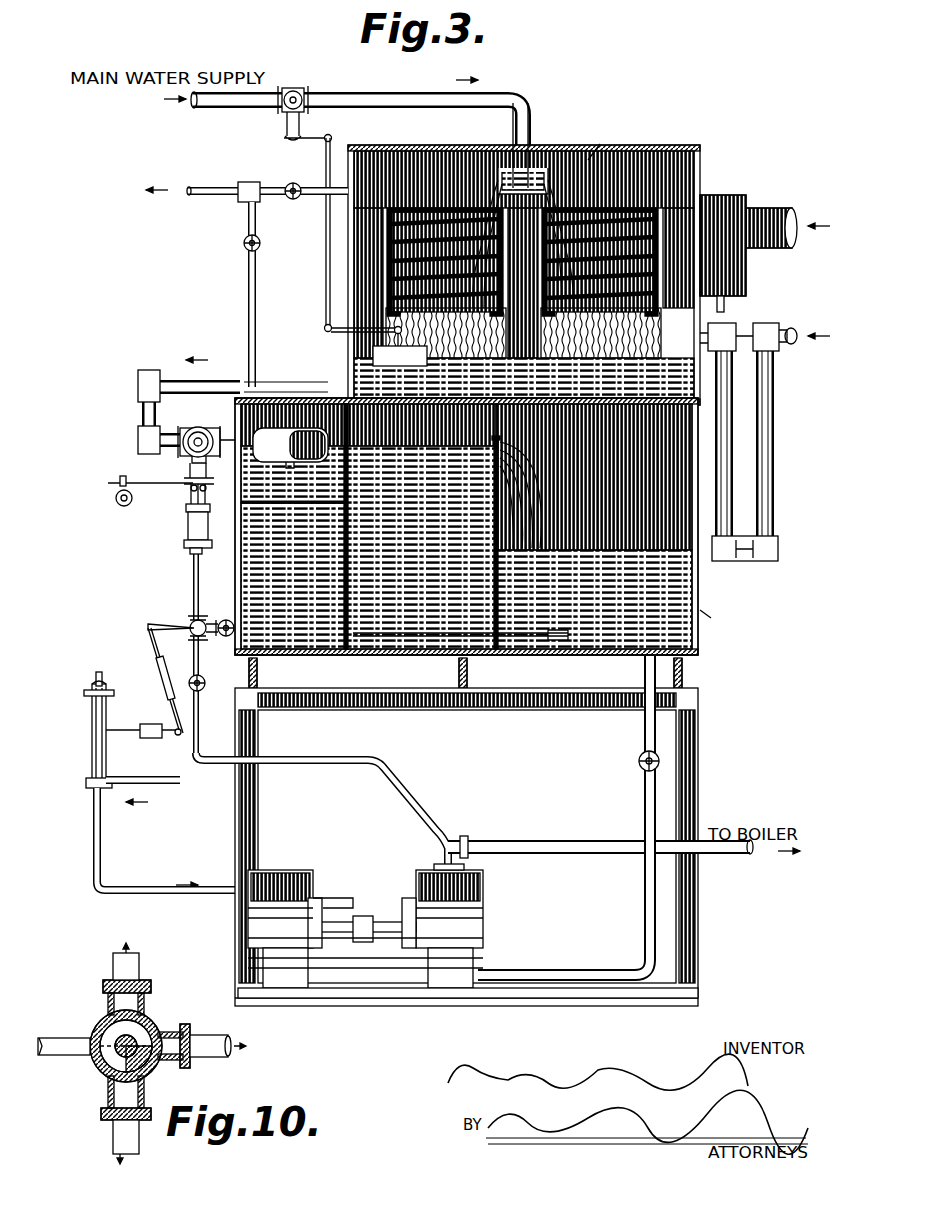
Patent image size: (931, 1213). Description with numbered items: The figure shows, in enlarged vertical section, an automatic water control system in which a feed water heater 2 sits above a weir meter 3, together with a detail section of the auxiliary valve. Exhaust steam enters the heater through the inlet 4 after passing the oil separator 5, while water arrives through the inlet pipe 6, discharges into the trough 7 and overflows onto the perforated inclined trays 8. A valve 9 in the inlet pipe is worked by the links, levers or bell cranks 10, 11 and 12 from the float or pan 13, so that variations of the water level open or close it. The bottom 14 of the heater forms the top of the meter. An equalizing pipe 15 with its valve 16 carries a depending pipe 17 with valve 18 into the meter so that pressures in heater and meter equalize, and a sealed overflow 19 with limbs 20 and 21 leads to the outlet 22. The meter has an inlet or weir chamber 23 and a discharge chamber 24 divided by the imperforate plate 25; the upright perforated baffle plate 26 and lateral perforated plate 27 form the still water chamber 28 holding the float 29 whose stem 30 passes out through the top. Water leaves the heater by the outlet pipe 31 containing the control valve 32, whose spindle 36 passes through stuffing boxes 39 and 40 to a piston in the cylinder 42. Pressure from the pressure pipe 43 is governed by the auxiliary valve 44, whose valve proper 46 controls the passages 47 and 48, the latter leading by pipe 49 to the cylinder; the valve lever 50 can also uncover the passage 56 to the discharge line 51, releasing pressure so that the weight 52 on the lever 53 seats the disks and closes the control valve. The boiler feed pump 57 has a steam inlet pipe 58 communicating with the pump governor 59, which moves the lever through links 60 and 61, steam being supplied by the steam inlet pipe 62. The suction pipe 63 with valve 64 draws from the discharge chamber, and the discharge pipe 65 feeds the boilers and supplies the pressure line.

In FIG. 3, the feed water heater 2 is at (536, 260).
In FIG. 3, the weir meter 3 is at (499, 543).
In FIG. 3, the inlet for the exhaust steam 4 is at (762, 238).
In FIG. 3, the oil separator 5 is at (748, 233).
In FIG. 3, the inlet pipe 6 is at (246, 97).
In FIG. 3, the trough 7 is at (522, 152).
In FIG. 3, the perforated inclined plates or trays 8 is at (592, 220).
In FIG. 3, the valve 9 is at (288, 82).
In FIG. 3, the link 10 is at (306, 130).
In FIG. 3, the lever 11 is at (318, 270).
In FIG. 3, the bell crank 12 is at (326, 326).
In FIG. 3, the float or pan 13 is at (418, 358).
In FIG. 3, the bottom of the heater 14 is at (600, 398).
In FIG. 3, the equalizing pipe 15 is at (254, 178).
In FIG. 3, the valve 16 is at (289, 175).
In FIG. 3, the pipe 17 is at (241, 265).
In FIG. 3, the valve 18 is at (252, 233).
In FIG. 3, the sealed overflow 19 is at (758, 430).
In FIG. 3, the limb or member 20 is at (722, 476).
In FIG. 3, the limb or member 21 is at (766, 454).
In FIG. 3, the outlet 22 is at (783, 321).
In FIG. 3, the inlet or weir chamber 23 is at (368, 425).
In FIG. 3, the exit or discharge chamber 24 is at (594, 526).
In FIG. 3, the imperforate plate 25 is at (492, 506).
In FIG. 3, the upright perforated baffle plate 26 is at (338, 536).
In FIG. 3, the laterally extending perforated plate 27 is at (288, 500).
In FIG. 3, the still water or float chamber 28 is at (293, 474).
In FIG. 3, the float 29 is at (290, 448).
In FIG. 3, the stem 30 is at (277, 372).
In FIG. 3, the outlet pipe 31 is at (162, 372).
In FIG. 3, the control valve 32 is at (190, 424).
In FIG. 3, the spindle 36 is at (178, 472).
In FIG. 3, the stuffing box 39 is at (217, 476).
In FIG. 3, the stuffing box 40 is at (176, 498).
In FIG. 3, the cylinder or casing 42 is at (176, 522).
In FIG. 3, the pressure pipe 43 is at (316, 752).
In FIG. 10, the pressure pipe 43 is at (108, 1128).
In FIG. 3, the auxiliary valve 44 is at (182, 612).
In FIG. 10, the auxiliary valve 44 is at (148, 1049).
In FIG. 10, the valve proper 46 is at (104, 1060).
In FIG. 10, the passage 47 is at (100, 1086).
In FIG. 10, the passage 48 is at (104, 994).
In FIG. 3, the pipe 49 is at (182, 556).
In FIG. 10, the pipe 49 is at (124, 954).
In FIG. 3, the valve lever 50 is at (142, 616).
In FIG. 10, the valve lever 50 is at (54, 1032).
In FIG. 3, the discharge line 51 is at (280, 628).
In FIG. 10, the discharge line 51 is at (200, 1036).
In FIG. 3, the weight 52 is at (106, 490).
In FIG. 3, the lever 53 is at (127, 476).
In FIG. 10, the passage 56 is at (160, 1026).
In FIG. 3, the boiler feed pump 57 is at (368, 980).
In FIG. 3, the steam inlet pipe 58 is at (152, 776).
In FIG. 3, the pump governor 59 is at (82, 778).
In FIG. 3, the link 60 is at (122, 718).
In FIG. 3, the link 61 is at (142, 636).
In FIG. 3, the steam inlet pipe 62 is at (158, 884).
In FIG. 3, the suction pipe 63 is at (568, 815).
In FIG. 3, the valve 64 is at (630, 751).
In FIG. 3, the discharge pipe 65 is at (506, 834).